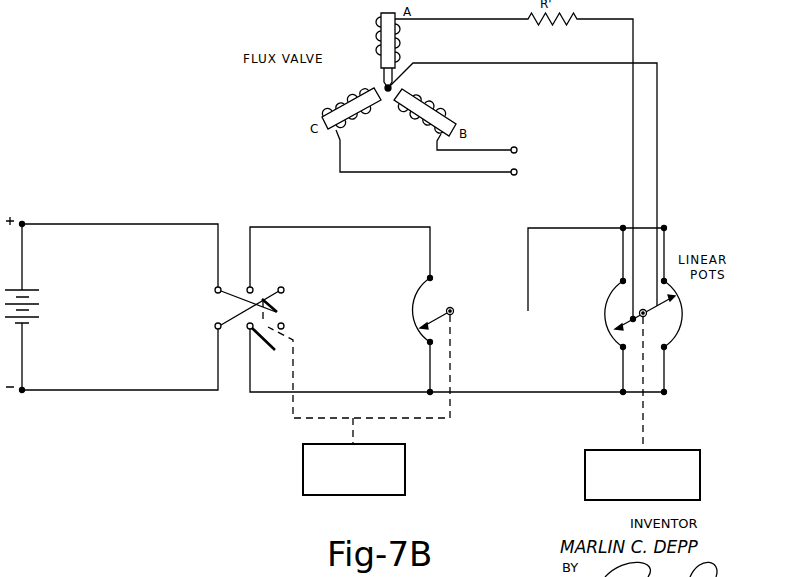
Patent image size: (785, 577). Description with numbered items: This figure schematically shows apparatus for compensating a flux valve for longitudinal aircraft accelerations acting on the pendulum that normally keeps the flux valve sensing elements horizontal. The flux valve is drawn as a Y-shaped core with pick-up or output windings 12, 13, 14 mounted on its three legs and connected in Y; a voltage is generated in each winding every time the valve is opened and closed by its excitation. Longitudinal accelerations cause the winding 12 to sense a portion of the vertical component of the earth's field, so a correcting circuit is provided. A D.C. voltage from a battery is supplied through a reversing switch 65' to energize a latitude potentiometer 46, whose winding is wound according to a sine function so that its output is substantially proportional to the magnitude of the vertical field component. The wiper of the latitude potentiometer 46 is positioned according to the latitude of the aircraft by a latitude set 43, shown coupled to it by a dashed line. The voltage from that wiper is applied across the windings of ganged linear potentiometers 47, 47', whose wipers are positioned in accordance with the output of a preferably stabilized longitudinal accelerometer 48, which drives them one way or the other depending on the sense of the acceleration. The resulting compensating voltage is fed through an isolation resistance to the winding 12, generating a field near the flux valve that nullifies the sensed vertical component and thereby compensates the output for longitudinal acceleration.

The pick-up winding 12 is at (402, 65).
The pick-up winding 13 is at (432, 92).
The pick-up winding 14 is at (357, 89).
The reversing switch 65' is at (252, 275).
The latitude potentiometer 46 is at (414, 289).
The linear potentiometer 47 is at (624, 326).
The linear potentiometer 47' is at (687, 317).
The latitude set 43 is at (407, 476).
The longitudinal accelerometer 48 is at (703, 482).